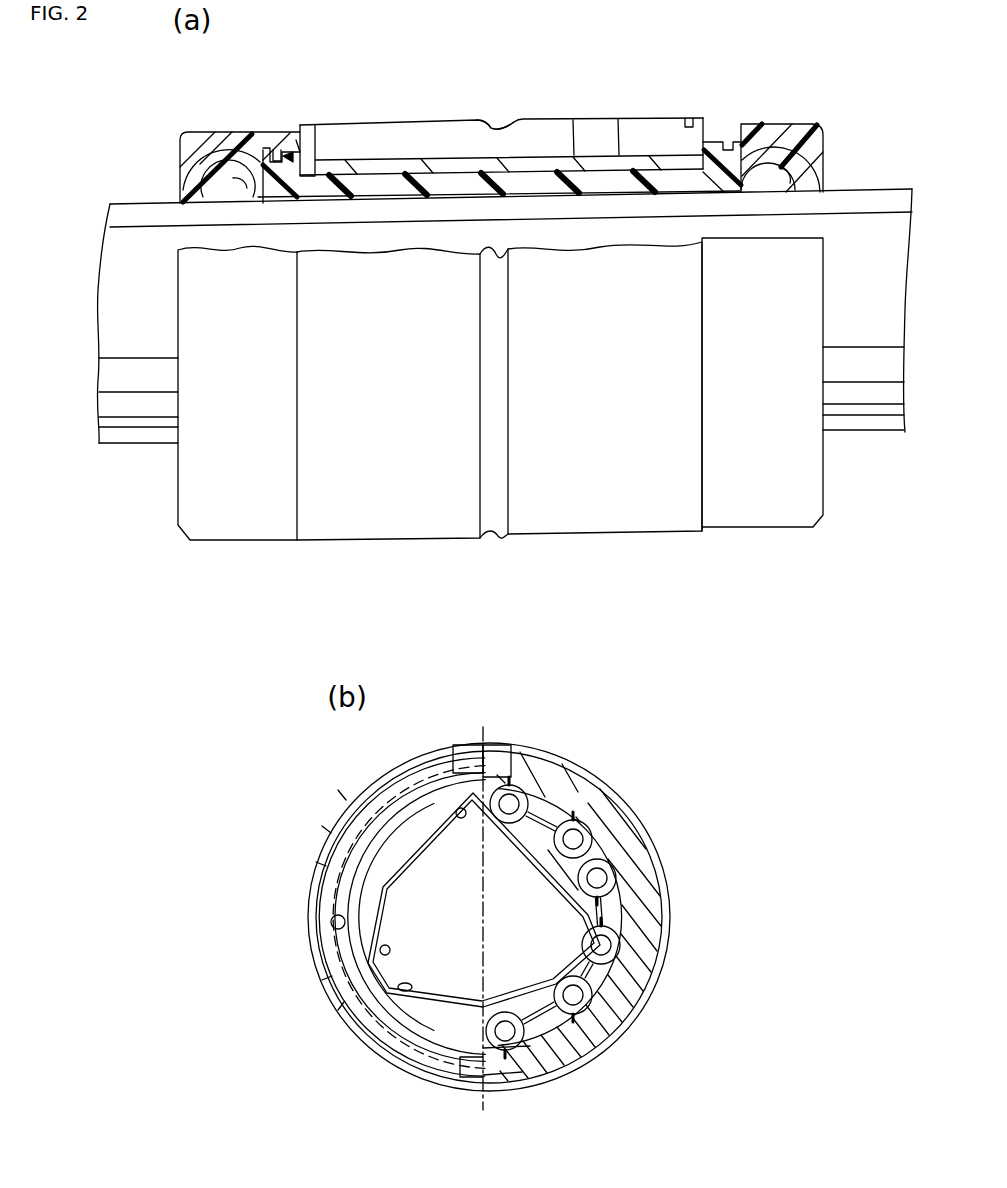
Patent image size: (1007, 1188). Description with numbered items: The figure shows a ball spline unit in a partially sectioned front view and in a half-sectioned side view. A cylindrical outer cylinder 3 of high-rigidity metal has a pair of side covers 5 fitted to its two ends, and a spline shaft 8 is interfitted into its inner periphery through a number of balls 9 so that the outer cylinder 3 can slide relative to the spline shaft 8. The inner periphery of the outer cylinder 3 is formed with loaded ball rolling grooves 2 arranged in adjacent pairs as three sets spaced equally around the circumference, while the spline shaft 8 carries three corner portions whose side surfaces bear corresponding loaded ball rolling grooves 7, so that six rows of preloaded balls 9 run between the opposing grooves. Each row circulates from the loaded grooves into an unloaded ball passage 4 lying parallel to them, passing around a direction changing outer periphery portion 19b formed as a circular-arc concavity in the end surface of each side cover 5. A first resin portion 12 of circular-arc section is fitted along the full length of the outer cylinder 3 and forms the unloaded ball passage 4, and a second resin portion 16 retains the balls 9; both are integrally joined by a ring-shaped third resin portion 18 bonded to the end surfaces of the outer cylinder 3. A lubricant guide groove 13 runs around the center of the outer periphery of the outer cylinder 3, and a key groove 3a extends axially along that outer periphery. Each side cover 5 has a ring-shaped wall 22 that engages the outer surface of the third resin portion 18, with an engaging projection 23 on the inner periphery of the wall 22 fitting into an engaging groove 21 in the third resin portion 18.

The loaded ball rolling groove 2 is at (530, 795).
The outer cylinder 3 is at (691, 124).
The key groove 3a is at (574, 154).
The unloaded ball passage 4 is at (768, 240).
The side cover 5 is at (207, 140).
The loaded ball rolling groove 7 is at (460, 818).
The spline shaft 8 is at (850, 432).
The ball 9 is at (527, 786).
The first resin portion 12 is at (570, 863).
The lubricant guide groove 13 is at (501, 128).
The second resin portion 16 is at (405, 186).
The third resin portion 18 is at (210, 146).
The direction changing outer periphery portion 19b is at (182, 166).
The engaging groove 21 is at (296, 140).
The ring-shaped wall 22 is at (276, 150).
The engaging projection 23 is at (283, 152).